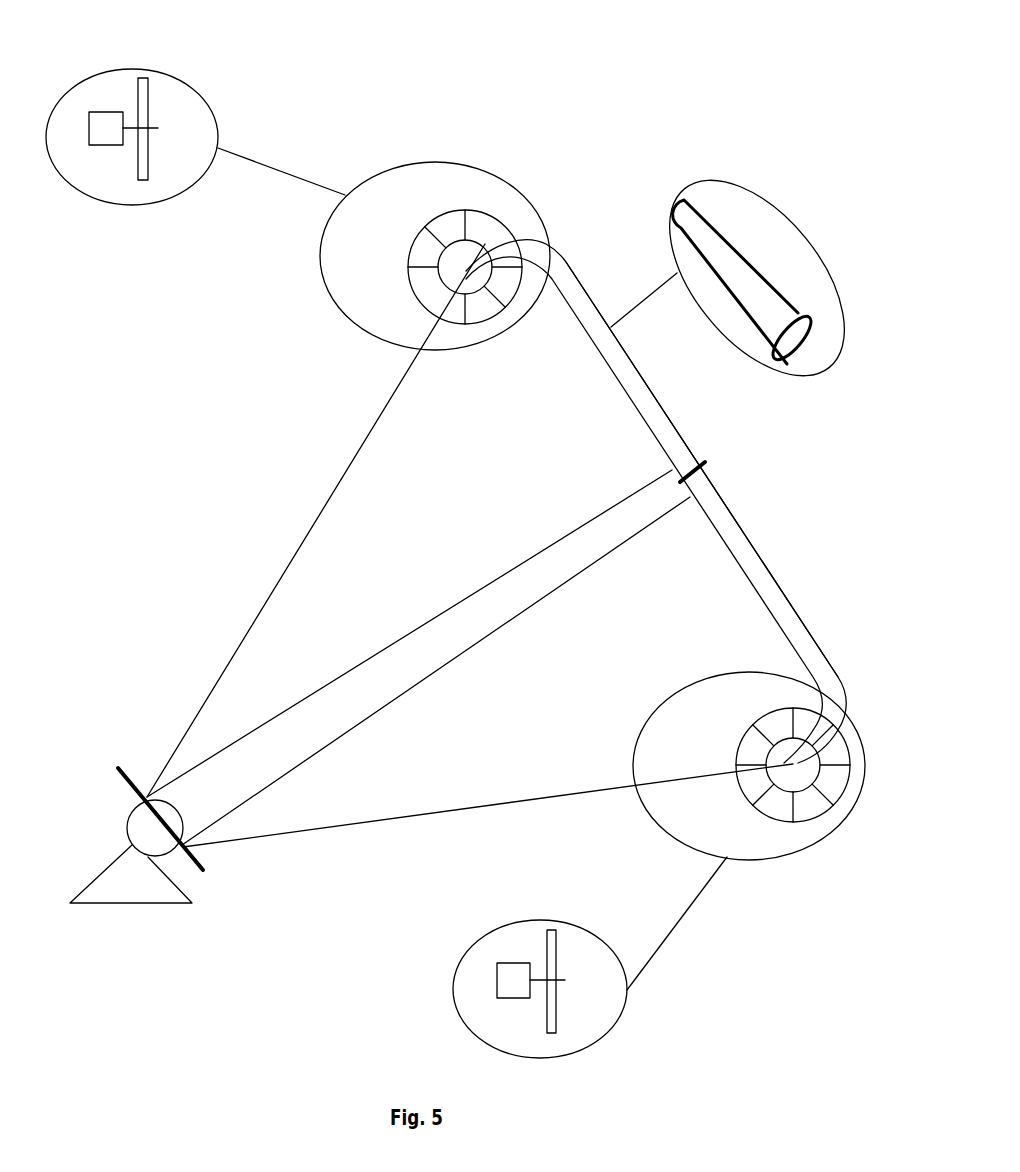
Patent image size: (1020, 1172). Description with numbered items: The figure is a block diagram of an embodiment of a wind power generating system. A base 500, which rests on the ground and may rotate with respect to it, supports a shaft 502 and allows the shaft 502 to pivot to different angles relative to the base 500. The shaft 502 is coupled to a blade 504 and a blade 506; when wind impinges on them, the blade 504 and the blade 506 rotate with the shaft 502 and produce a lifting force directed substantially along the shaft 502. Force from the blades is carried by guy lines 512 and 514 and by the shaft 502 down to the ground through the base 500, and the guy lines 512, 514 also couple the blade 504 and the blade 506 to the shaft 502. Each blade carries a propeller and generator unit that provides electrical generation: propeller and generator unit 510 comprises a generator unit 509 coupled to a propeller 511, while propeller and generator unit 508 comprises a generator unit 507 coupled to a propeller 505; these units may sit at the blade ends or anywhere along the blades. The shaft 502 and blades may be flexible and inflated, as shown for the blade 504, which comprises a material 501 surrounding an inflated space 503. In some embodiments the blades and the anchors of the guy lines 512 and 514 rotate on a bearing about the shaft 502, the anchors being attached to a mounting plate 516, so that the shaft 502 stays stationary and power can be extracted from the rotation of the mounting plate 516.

The base 500 is at (123, 878).
The material 501 is at (750, 224).
The shaft 502 is at (530, 552).
The inflated space 503 is at (748, 298).
The blade 504 is at (654, 398).
The propeller 505 is at (556, 947).
The blade 506 is at (777, 590).
The generator unit 507 is at (507, 987).
The propeller and generator unit 508 is at (753, 738).
The generator unit 509 is at (97, 135).
The propeller and generator unit 510 is at (428, 248).
The propeller 511 is at (148, 93).
The guy line 512 is at (296, 546).
The guy line 514 is at (398, 814).
The mounting plate 516 is at (122, 777).